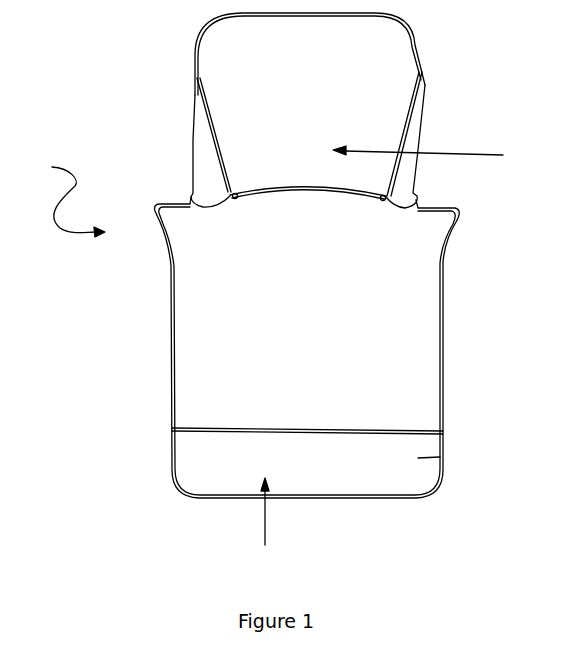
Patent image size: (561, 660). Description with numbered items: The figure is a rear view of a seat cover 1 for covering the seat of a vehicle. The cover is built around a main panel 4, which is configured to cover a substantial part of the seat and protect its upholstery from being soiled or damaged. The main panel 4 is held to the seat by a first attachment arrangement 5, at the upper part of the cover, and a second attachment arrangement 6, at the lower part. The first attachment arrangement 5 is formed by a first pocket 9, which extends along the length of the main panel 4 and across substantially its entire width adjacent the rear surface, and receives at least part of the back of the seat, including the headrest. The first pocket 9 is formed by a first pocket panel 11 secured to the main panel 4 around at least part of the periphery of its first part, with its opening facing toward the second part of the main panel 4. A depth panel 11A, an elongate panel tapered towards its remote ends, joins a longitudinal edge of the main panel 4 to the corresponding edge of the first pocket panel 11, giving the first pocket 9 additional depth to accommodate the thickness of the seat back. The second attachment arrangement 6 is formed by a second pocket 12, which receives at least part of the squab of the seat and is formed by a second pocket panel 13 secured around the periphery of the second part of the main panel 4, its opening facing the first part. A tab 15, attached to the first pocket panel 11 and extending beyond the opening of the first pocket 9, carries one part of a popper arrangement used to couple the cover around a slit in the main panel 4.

The seat cover 1 is at (71, 193).
The main panel 4 is at (308, 327).
The first attachment arrangement 5 is at (307, 98).
The second attachment arrangement 6 is at (298, 477).
The first pocket 9 is at (428, 150).
The first pocket panel 11 is at (233, 130).
The depth panel 11A is at (422, 108).
The second pocket 12 is at (256, 530).
The second pocket panel 13 is at (418, 458).
The tab 15 is at (377, 198).